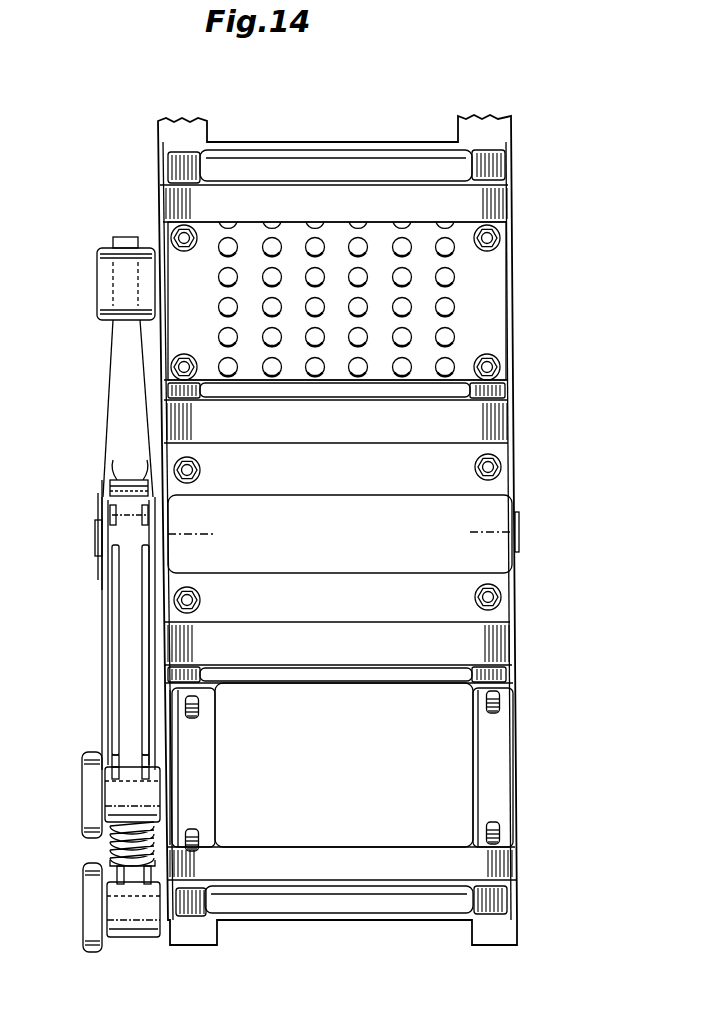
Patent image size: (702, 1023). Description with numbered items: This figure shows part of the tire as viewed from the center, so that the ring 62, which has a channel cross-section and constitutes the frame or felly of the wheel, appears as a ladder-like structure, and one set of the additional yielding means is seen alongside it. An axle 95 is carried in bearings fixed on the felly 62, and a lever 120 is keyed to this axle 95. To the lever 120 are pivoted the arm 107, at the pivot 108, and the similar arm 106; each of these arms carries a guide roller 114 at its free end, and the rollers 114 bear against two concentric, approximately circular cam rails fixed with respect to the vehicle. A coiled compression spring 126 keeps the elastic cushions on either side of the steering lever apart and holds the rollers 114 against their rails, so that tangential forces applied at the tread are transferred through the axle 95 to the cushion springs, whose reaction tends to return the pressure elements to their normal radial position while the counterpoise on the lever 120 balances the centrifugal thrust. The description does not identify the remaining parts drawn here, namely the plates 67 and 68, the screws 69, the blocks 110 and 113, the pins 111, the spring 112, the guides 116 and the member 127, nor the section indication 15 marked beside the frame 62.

The section line 15 is at (162, 394).
The ring 62 is at (341, 863).
The lower plate 67 is at (456, 773).
The perforated plate 68 is at (478, 303).
The screws 69 is at (184, 240).
The axle 95 is at (90, 544).
The arm 106 is at (110, 862).
The arm 107 is at (132, 632).
The pivot 108 is at (128, 514).
The slide block 110 is at (132, 772).
The guide pins 111 is at (133, 878).
The compression spring 112 is at (112, 826).
The lower block 113 is at (137, 938).
The guide roller 114 is at (90, 812).
The guide rods 116 is at (148, 700).
The lever 120 is at (122, 380).
The coiled compression spring 126 is at (170, 832).
The stop 127 is at (112, 755).